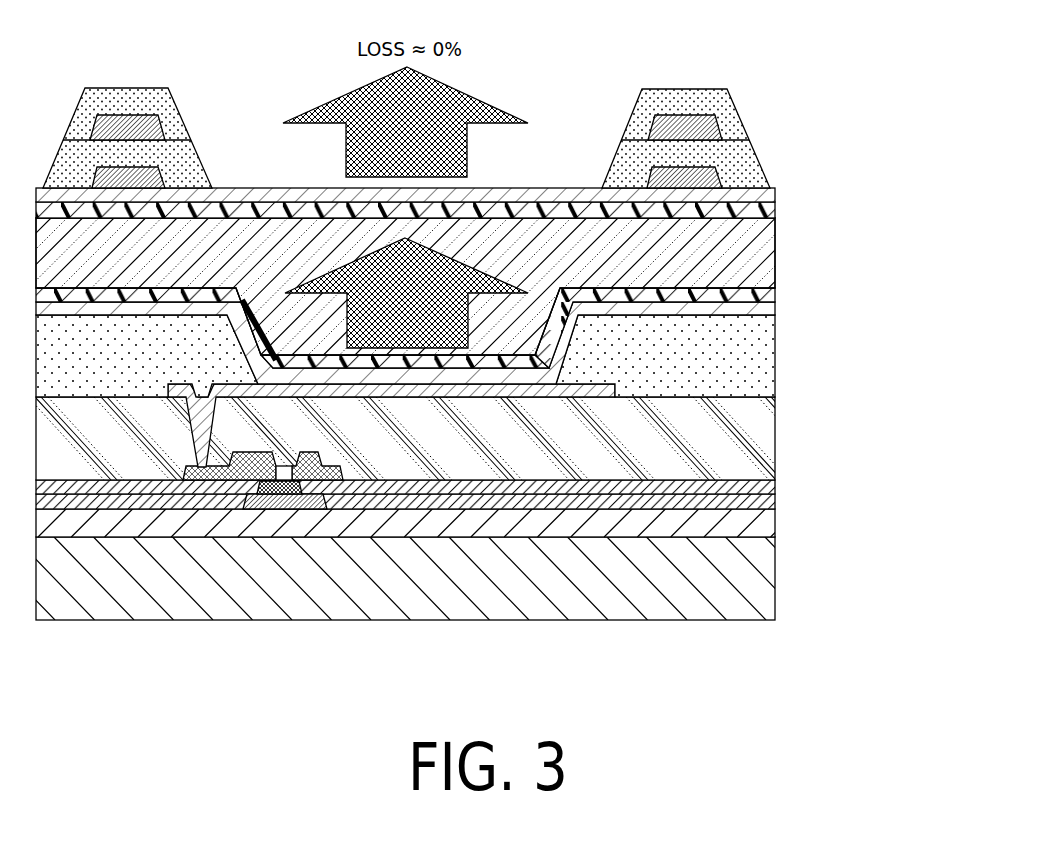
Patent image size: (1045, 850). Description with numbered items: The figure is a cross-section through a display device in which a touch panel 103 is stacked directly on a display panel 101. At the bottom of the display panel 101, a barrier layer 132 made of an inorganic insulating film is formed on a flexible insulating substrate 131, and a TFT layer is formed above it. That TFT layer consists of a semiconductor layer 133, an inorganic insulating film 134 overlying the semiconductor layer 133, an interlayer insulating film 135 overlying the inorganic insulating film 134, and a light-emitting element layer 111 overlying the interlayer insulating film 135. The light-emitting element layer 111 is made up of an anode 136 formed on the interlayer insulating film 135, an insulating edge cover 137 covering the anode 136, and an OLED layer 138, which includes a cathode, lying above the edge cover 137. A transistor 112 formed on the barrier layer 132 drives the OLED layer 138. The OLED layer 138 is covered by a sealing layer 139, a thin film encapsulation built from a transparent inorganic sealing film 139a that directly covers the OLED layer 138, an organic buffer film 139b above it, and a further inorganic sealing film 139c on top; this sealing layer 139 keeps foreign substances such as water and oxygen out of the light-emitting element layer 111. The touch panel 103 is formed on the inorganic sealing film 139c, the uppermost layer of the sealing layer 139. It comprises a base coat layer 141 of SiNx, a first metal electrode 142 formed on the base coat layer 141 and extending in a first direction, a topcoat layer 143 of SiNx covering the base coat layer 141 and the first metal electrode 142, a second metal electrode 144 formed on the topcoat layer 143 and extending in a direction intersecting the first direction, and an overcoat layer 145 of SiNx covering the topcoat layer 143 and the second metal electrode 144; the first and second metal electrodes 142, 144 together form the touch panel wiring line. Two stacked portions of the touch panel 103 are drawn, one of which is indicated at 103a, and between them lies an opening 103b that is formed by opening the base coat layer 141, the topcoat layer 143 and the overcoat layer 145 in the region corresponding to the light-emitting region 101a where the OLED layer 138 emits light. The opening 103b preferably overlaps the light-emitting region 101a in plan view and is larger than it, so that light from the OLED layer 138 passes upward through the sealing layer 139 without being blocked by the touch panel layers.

The display panel 101 is at (898, 238).
The light-emitting region 101a is at (261, 305).
The touch panel 103 is at (898, 85).
The first protruding structure 103a is at (746, 94).
The opening 103b is at (182, 113).
The light-emitting element layer 111 is at (529, 520).
The transistor 112 is at (282, 514).
The flexible insulating substrate 131 is at (777, 578).
The barrier layer 132 is at (777, 522).
The semiconductor layer 133 is at (780, 504).
The inorganic insulating film 134 is at (777, 485).
The interlayer insulating film 135 is at (777, 440).
The anode 136 is at (616, 388).
The edge cover 137 is at (777, 345).
The OLED layer 138 is at (777, 312).
The sealing layer 139 is at (837, 207).
The inorganic sealing film 139a is at (777, 295).
The organic buffer film 139b is at (777, 253).
The inorganic sealing film 139c is at (777, 218).
The base coat layer 141 is at (760, 197).
The first metal electrode 142 is at (718, 176).
The topcoat layer 143 is at (738, 150).
The second metal electrode 144 is at (712, 128).
The overcoat layer 145 is at (720, 102).